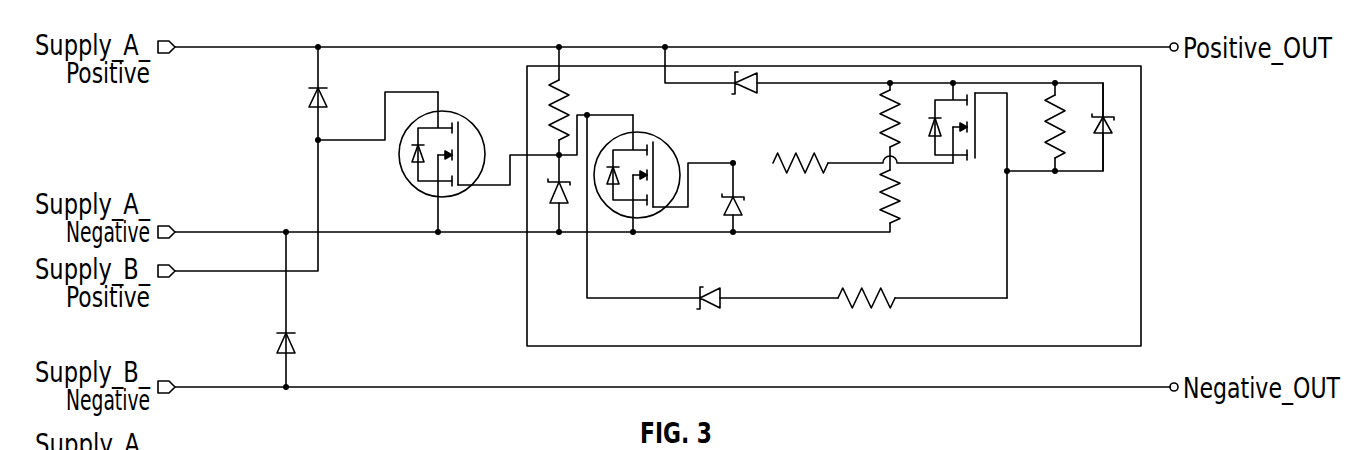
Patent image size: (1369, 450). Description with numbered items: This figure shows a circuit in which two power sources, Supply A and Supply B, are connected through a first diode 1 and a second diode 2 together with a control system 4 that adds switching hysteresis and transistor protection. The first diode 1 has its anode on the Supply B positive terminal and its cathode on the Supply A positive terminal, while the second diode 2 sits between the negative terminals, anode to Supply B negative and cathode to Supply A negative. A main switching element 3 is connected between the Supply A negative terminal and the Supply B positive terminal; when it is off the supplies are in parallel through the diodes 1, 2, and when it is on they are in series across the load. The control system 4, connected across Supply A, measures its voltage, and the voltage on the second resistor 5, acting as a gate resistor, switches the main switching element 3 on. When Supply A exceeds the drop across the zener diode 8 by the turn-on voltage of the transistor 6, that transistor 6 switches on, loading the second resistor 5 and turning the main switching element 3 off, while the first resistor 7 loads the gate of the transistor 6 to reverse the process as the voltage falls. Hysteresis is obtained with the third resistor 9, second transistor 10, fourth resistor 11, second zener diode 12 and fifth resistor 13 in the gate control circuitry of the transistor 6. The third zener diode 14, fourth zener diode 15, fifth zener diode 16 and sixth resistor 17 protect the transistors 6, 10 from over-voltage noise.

The first diode 1 is at (313, 96).
The second diode 2 is at (282, 343).
The main switching element 3 is at (402, 156).
The control system 4 is at (527, 328).
The second resistor 5 is at (573, 107).
The transistor 6 is at (645, 133).
The first resistor 7 is at (905, 205).
The zener diode 8 is at (750, 92).
The third resistor 9 is at (880, 105).
The second transistor 10 is at (933, 140).
The fourth resistor 11 is at (1065, 137).
The second zener diode 12 is at (707, 290).
The fifth resistor 13 is at (862, 290).
The third zener diode 14 is at (1112, 118).
The fourth zener diode 15 is at (740, 207).
The fifth zener diode 16 is at (566, 182).
The sixth resistor 17 is at (780, 157).